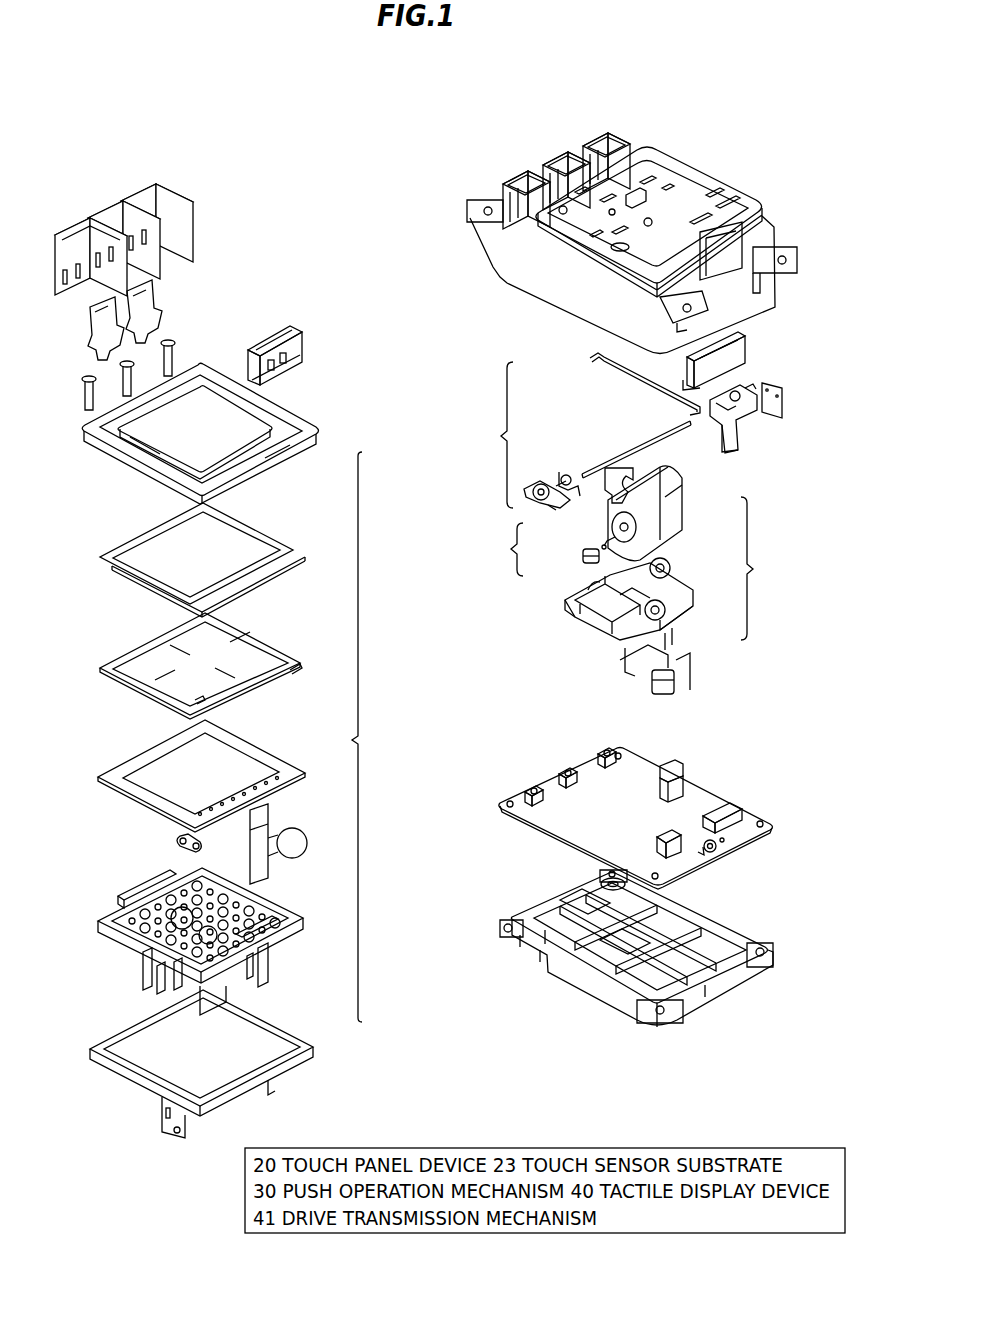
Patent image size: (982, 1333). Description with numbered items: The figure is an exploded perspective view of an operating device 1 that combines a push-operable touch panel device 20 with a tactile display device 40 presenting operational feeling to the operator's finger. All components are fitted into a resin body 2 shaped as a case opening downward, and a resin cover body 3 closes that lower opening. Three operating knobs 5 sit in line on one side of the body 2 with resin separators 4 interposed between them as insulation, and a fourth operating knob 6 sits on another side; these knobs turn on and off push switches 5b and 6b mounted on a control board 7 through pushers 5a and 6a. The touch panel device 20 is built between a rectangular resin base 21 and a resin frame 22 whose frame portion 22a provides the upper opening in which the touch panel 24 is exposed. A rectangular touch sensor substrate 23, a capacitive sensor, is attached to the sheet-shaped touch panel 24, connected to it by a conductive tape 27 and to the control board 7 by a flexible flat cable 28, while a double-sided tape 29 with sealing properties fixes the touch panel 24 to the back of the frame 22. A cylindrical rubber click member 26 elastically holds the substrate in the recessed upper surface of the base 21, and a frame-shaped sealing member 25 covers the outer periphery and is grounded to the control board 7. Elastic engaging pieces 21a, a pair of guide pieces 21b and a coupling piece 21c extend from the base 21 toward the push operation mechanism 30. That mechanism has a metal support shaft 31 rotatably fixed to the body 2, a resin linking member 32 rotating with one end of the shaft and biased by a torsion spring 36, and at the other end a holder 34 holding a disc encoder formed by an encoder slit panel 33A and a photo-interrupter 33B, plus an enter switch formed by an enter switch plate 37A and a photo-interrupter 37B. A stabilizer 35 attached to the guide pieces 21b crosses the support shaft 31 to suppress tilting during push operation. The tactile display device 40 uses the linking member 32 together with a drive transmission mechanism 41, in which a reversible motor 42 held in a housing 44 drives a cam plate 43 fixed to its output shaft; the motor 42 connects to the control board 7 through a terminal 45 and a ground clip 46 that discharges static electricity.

The operating device 1 is at (283, 128).
The body 2 is at (541, 287).
The cover body 3 is at (617, 1003).
The separator 4 is at (158, 298).
The operating knob 5 is at (155, 200).
The pusher 5a is at (170, 356).
The push switch 5b is at (530, 790).
The fourth operating knob 6 is at (295, 326).
The pusher 6a is at (733, 355).
The push switch 6b is at (712, 848).
The control board 7 is at (553, 822).
The touch panel device 20 is at (373, 737).
The base 21 is at (290, 903).
The elastic engaging piece 21a is at (178, 986).
The guide piece 21b is at (268, 973).
The coupling piece 21c is at (140, 969).
The frame 22 is at (247, 477).
The frame portion 22a is at (278, 451).
The touch sensor substrate 23 is at (247, 737).
The touch panel 24 is at (264, 644).
The sealing member 25 is at (298, 1026).
The click member 26 is at (173, 841).
The conductive tape 27 is at (265, 580).
The flexible flat cable 28 is at (300, 833).
The double-sided tape 29 is at (262, 540).
The push operation mechanism 30 is at (492, 435).
The support shaft 31 is at (643, 443).
The linking member 32 is at (549, 480).
The encoder slit panel 33A is at (781, 402).
The photo-interrupter 33B is at (680, 766).
The holder 34 is at (741, 427).
The stabilizer 35 is at (612, 378).
The torsion spring 36 is at (567, 470).
The enter switch plate 37A is at (730, 445).
The photo-interrupter 37B is at (684, 791).
The tactile display device 40 is at (760, 568).
The drive transmission mechanism 41 is at (500, 549).
The motor 42 is at (612, 530).
The cam plate 43 is at (583, 560).
The housing 44 is at (690, 598).
The terminal 45 is at (673, 640).
The ground clip 46 is at (634, 487).